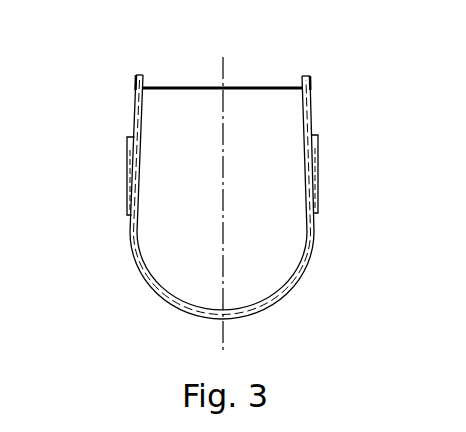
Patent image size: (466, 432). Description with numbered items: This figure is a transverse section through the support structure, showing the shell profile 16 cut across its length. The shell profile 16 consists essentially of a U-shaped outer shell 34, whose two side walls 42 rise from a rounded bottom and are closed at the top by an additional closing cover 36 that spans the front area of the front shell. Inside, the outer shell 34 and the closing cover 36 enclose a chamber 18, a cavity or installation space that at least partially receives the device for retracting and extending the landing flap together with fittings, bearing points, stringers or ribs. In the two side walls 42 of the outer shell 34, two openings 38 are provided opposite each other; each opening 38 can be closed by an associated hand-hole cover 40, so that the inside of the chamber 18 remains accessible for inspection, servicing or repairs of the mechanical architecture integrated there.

The shell profile 16 is at (215, 198).
The chamber 18 is at (192, 227).
The U-shaped outer shell 34 is at (283, 295).
The closing cover 36 is at (257, 87).
The opening 38 is at (137, 178).
The hand-hole cover 40 is at (130, 192).
The side wall 42 is at (135, 118).